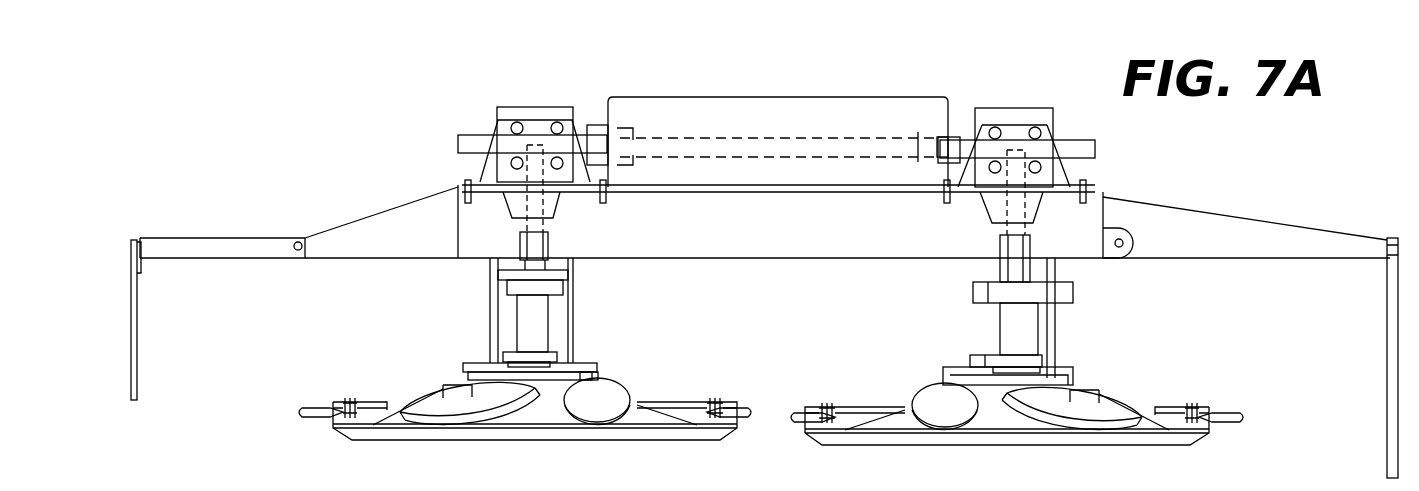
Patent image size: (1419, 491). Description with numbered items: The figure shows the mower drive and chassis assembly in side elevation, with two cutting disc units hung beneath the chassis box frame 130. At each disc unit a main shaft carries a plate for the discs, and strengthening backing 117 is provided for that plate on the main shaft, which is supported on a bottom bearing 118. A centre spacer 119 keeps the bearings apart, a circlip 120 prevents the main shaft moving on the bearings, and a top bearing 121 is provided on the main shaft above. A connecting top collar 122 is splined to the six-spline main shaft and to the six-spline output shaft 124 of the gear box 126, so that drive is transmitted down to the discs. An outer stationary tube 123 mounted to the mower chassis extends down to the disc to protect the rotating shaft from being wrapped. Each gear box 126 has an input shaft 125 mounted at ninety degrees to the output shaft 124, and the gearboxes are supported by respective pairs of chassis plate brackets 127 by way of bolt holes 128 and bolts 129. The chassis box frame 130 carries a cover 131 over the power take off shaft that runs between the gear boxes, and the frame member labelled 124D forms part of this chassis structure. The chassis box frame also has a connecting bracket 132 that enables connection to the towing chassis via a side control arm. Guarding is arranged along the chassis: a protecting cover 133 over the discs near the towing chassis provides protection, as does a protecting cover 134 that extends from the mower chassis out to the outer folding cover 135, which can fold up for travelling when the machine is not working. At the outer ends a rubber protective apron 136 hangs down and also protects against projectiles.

The strengthening backing 117 is at (771, 434).
The bottom bearing 118 is at (560, 360).
The centre spacer 119 is at (548, 322).
The circlip 120 is at (568, 285).
The top bearing 121 is at (558, 285).
The connecting top collar 122 is at (549, 242).
The outer stationary tube 123 is at (488, 337).
The output shaft 124 is at (500, 186).
The frame member 124D is at (449, 247).
The input shaft 125 is at (462, 144).
The gear box 126 is at (508, 106).
The chassis plate brackets 127 is at (543, 120).
The bolt holes 128 is at (511, 160).
The bolts 129 is at (468, 197).
The chassis box frame 130 is at (1043, 218).
The cover 131 is at (887, 115).
The connecting bracket 132 is at (1130, 233).
The protecting cover 133 is at (1277, 235).
The protecting cover 134 is at (365, 238).
The outer folding cover 135 is at (176, 247).
The rubber protective apron 136 is at (177, 388).